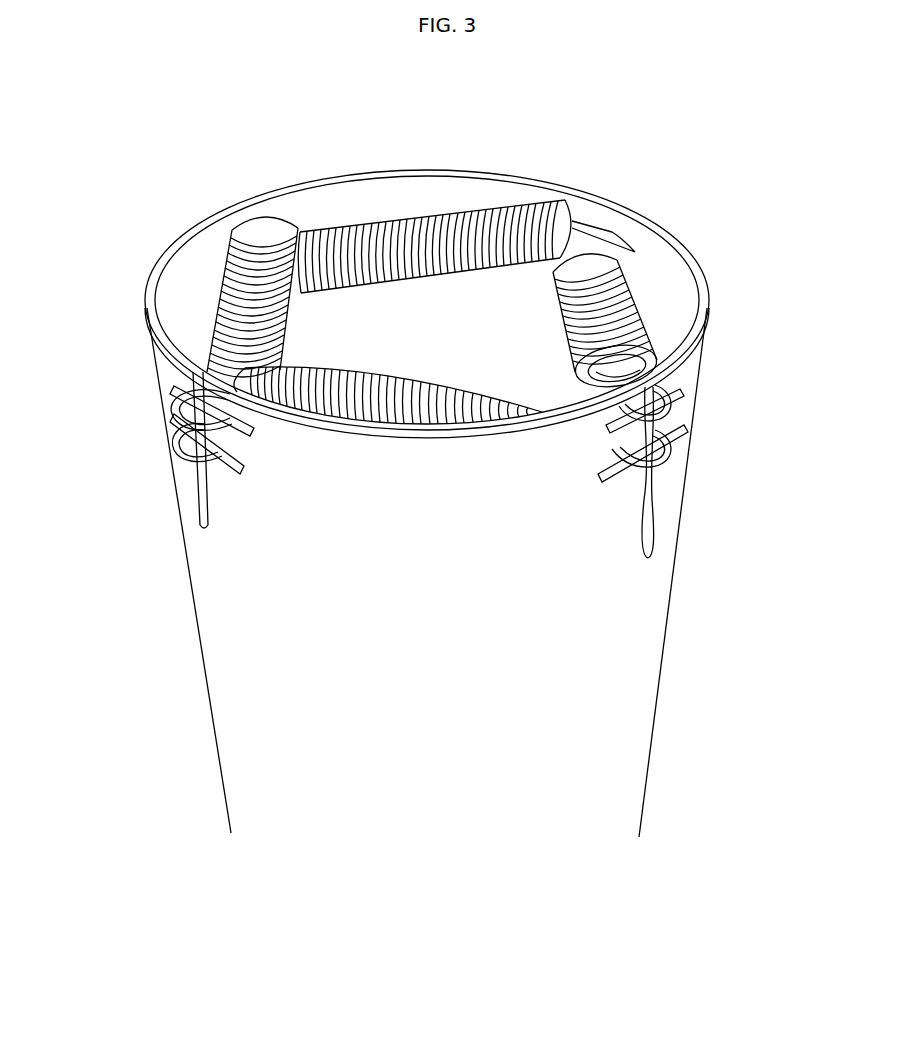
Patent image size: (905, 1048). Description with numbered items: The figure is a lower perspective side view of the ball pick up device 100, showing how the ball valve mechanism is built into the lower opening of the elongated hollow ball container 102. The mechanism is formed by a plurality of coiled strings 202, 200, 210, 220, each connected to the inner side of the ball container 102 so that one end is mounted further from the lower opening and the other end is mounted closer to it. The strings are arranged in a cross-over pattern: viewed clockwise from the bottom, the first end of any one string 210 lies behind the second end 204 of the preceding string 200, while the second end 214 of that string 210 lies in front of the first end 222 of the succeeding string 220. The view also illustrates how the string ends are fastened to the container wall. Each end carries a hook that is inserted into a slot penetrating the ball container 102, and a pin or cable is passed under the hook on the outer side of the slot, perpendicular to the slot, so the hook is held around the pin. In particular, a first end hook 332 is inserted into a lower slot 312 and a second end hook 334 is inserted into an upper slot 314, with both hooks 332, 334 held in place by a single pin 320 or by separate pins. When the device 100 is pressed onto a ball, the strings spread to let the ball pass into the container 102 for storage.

The ball pick up device 100 is at (118, 246).
The elongated hollow ball container 102 is at (213, 745).
The string 200 is at (634, 302).
The string 202 is at (402, 213).
The second end of preceding string 204 is at (592, 366).
The string 210 is at (410, 376).
The second end of string 214 is at (262, 378).
The string 220 is at (208, 297).
The first end of succeeding string 222 is at (203, 362).
The lower slot 312 is at (692, 432).
The upper slot 314 is at (680, 392).
The pin 320 is at (637, 515).
The first end hook 332 is at (665, 470).
The second end hook 334 is at (670, 412).